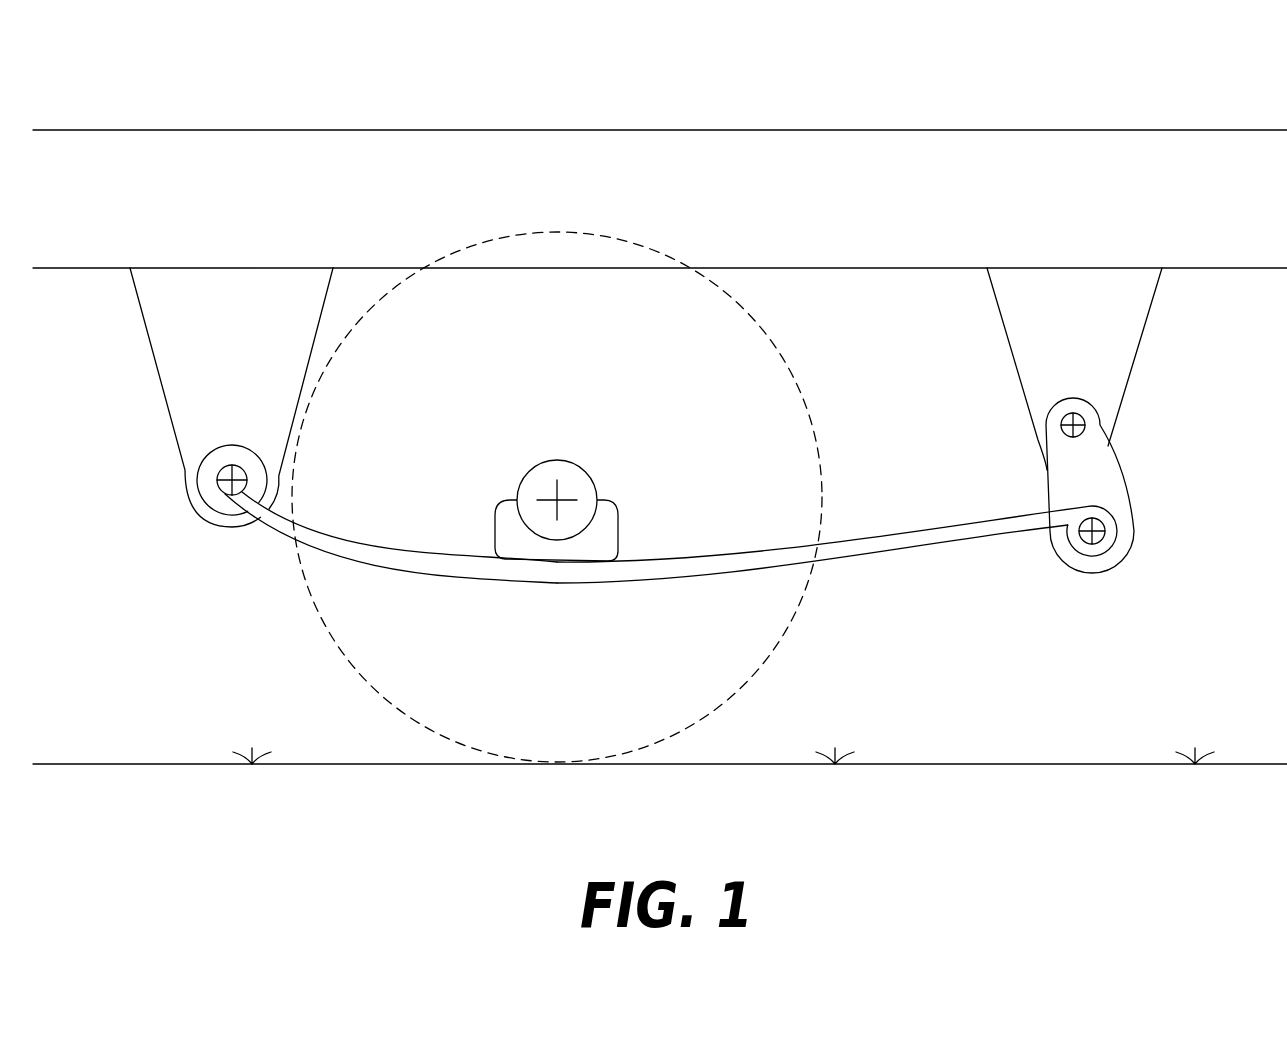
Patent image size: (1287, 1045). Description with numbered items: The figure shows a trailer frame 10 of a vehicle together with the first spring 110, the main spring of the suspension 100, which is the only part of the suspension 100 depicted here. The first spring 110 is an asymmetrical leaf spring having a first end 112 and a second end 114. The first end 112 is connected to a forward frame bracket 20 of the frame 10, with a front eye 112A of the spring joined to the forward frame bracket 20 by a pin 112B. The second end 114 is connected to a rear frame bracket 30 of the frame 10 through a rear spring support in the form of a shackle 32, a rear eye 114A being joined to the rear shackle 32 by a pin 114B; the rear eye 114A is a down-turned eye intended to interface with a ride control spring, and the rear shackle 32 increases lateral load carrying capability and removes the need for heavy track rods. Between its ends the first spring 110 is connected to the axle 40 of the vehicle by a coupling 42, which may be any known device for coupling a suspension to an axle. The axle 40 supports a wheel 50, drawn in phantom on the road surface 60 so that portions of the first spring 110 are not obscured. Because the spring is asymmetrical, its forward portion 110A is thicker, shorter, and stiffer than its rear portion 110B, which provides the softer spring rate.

The trailer frame 10 is at (1022, 148).
The forward frame bracket 20 is at (168, 357).
The rear frame bracket 30 is at (1120, 344).
The shackle 32 is at (1098, 480).
The axle 40 is at (592, 476).
The coupling 42 is at (600, 533).
The wheel 50 is at (743, 335).
The road surface 60 is at (888, 837).
The suspension 100 is at (892, 378).
The first spring 110 is at (656, 550).
The forward portion 110A is at (420, 551).
The rear portion 110B is at (905, 536).
The first end 112 is at (279, 472).
The front eye 112A is at (238, 446).
The pin 112B is at (242, 470).
The second end 114 is at (1099, 569).
The rear eye 114A is at (1093, 548).
The pin 114B is at (1085, 533).